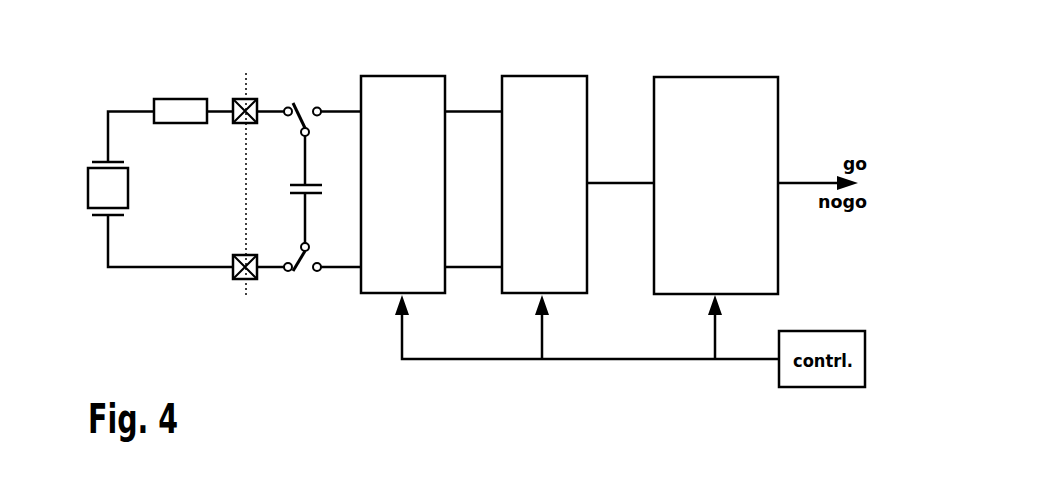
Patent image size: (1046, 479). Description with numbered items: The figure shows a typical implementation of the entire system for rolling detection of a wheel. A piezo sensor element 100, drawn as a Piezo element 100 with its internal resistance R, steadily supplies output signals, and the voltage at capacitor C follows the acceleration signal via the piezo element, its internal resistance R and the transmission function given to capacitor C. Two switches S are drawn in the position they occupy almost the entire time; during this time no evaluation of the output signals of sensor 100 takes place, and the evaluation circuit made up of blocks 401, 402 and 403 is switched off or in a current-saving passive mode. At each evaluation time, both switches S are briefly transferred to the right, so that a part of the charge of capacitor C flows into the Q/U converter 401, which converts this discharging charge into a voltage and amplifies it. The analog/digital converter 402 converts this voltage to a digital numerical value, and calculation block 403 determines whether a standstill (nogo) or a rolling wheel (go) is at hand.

The sensor element 100 is at (238, 283).
The piezo element Piezo is at (128, 193).
The internal resistance R is at (181, 99).
The switch S is at (298, 110).
The capacitor C is at (311, 189).
The Q/U converter 401 is at (402, 76).
The analog/digital converter 402 is at (542, 76).
The calculation block 403 is at (714, 77).